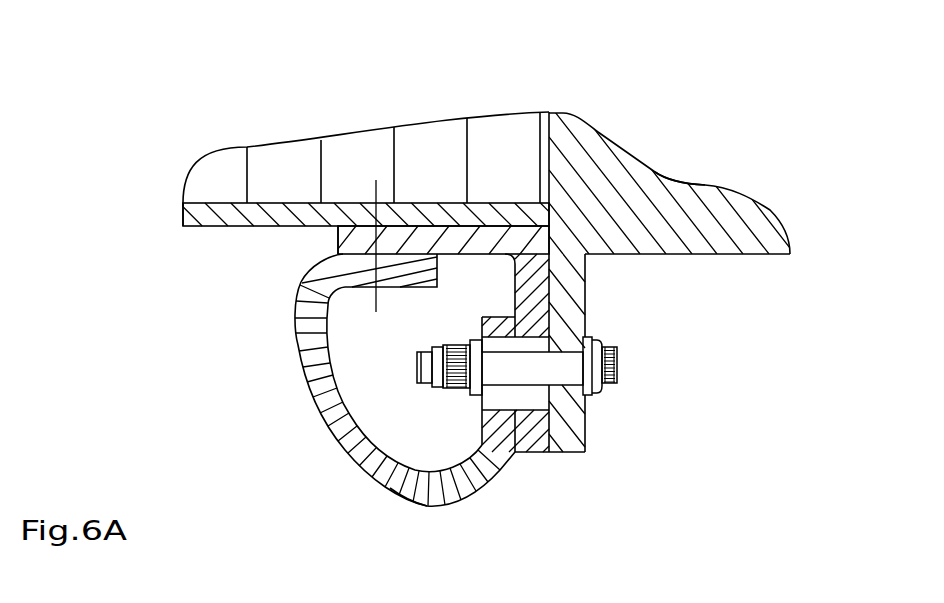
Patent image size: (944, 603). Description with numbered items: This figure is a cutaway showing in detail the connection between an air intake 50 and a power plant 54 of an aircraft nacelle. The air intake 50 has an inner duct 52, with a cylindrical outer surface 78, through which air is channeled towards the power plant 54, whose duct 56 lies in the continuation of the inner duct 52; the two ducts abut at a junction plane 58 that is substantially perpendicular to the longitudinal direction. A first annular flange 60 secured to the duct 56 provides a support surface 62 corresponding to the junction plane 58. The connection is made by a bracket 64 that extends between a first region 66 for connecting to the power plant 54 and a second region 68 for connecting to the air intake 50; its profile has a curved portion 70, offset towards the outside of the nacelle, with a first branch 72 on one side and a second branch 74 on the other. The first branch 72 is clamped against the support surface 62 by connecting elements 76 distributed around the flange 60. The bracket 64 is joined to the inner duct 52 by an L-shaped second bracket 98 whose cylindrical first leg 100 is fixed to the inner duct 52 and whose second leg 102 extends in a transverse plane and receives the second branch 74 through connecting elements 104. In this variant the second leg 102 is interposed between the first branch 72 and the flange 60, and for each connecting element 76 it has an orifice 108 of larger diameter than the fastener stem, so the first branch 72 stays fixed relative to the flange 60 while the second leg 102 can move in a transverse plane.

The air intake 50 is at (285, 138).
The inner duct 52 is at (413, 130).
The power plant 54 is at (751, 263).
The duct 56 is at (678, 182).
The junction plane 58 is at (563, 153).
The first annular flange 60 is at (568, 443).
The support surface 62 is at (540, 274).
The bracket 64 is at (328, 461).
The first region 66 is at (522, 398).
The second region 68 is at (410, 240).
The curved portion 70 is at (415, 492).
The first branch 72 is at (487, 323).
The second branch 74 is at (337, 250).
The connecting elements 76 is at (622, 379).
The cylindrical outer surface 78 is at (208, 228).
The second bracket 98 is at (492, 270).
The first leg 100 is at (473, 237).
The second leg 102 is at (538, 302).
The connecting elements 104 is at (363, 300).
The orifice 108 is at (543, 395).